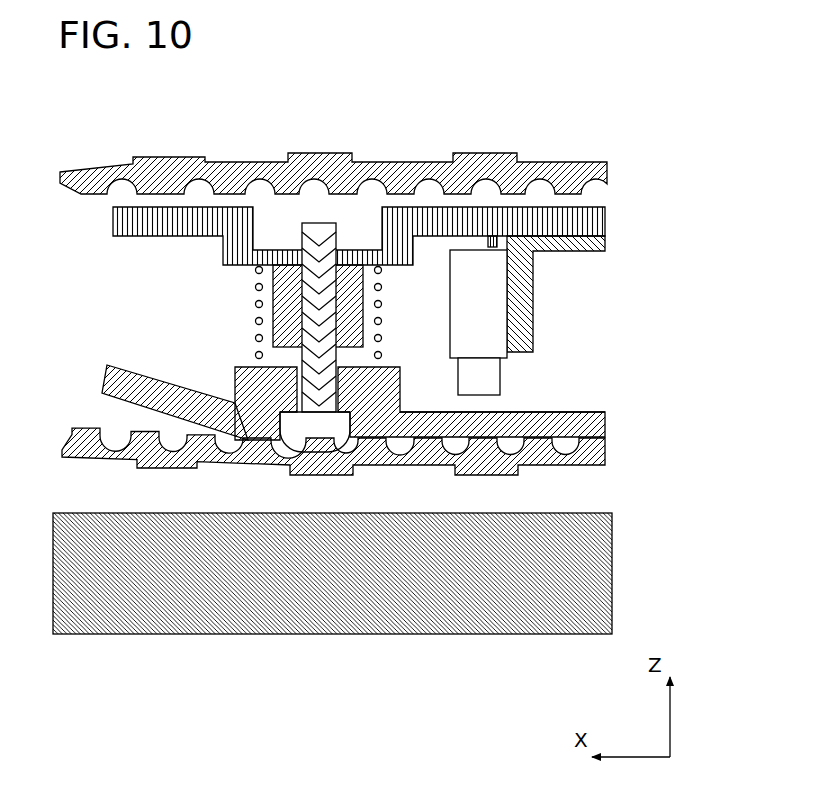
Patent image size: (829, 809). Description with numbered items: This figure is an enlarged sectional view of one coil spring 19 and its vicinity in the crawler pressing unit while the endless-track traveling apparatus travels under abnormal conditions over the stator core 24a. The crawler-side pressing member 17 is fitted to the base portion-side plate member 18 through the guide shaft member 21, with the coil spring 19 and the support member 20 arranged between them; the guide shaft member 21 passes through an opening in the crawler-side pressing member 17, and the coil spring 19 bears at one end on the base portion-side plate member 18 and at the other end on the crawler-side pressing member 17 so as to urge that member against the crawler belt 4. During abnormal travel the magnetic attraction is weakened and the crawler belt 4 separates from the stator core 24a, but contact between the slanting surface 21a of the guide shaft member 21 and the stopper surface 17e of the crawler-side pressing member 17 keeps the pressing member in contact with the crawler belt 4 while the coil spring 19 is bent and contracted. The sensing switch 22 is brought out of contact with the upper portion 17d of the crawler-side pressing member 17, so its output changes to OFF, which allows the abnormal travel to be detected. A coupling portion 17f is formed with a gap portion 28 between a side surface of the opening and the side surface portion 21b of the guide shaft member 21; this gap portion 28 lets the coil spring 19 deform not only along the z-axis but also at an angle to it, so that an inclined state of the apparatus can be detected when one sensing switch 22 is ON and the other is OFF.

The crawler belt 4 is at (605, 448).
The crawler-side pressing member 17 is at (412, 421).
The upper portion of the crawler-side pressing member 17d is at (580, 410).
The stopper surface 17e is at (300, 440).
The coupling portion 17f is at (235, 367).
The base portion-side plate member 18 is at (605, 222).
The coil spring 19 is at (259, 302).
The support member 20 is at (278, 294).
The guide shaft member 21 is at (278, 294).
The slanting surface 21a is at (340, 447).
The side surface portion 21b is at (258, 356).
The sensing switch 22 is at (486, 316).
The stator core 24a is at (583, 540).
The gap portion 28 is at (364, 328).